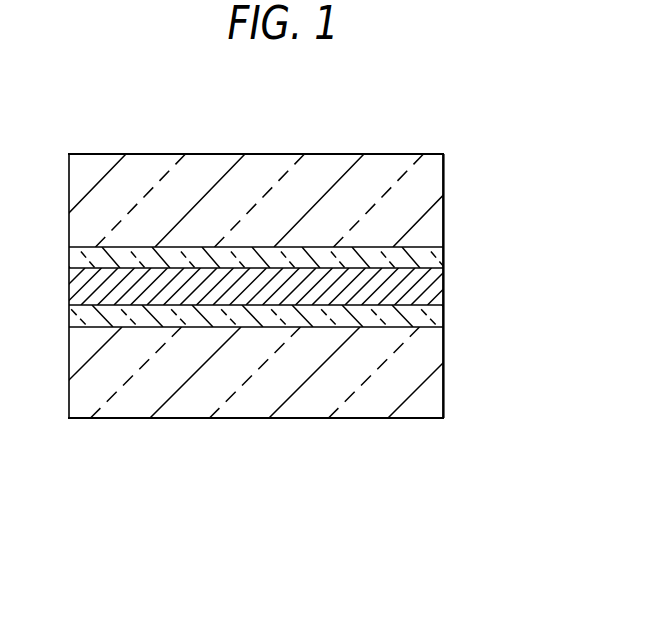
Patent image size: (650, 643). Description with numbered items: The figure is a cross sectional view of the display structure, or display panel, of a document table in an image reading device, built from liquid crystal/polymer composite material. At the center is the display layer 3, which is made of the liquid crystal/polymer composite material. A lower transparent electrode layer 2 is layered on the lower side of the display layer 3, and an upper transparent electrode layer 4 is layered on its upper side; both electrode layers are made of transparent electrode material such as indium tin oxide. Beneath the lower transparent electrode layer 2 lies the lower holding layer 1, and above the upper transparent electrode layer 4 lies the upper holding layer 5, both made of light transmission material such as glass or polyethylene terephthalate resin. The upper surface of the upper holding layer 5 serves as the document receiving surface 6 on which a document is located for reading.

The lower holding layer 1 is at (420, 372).
The lower transparent electrode layer 2 is at (422, 315).
The display layer 3 is at (445, 285).
The upper transparent electrode layer 4 is at (420, 258).
The upper holding layer 5 is at (437, 199).
The document receiving surface 6 is at (407, 152).